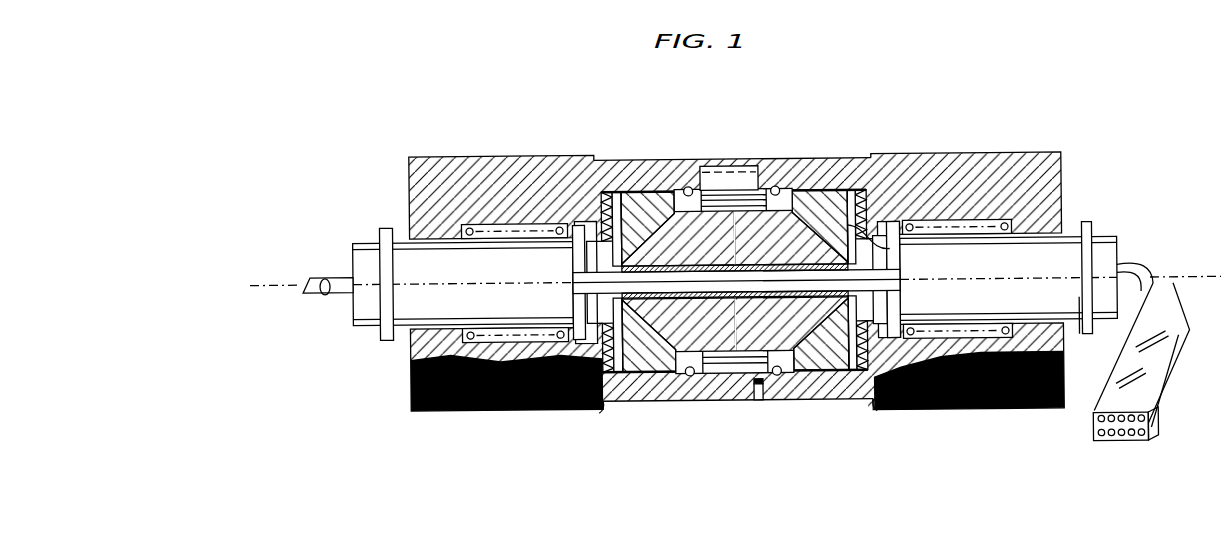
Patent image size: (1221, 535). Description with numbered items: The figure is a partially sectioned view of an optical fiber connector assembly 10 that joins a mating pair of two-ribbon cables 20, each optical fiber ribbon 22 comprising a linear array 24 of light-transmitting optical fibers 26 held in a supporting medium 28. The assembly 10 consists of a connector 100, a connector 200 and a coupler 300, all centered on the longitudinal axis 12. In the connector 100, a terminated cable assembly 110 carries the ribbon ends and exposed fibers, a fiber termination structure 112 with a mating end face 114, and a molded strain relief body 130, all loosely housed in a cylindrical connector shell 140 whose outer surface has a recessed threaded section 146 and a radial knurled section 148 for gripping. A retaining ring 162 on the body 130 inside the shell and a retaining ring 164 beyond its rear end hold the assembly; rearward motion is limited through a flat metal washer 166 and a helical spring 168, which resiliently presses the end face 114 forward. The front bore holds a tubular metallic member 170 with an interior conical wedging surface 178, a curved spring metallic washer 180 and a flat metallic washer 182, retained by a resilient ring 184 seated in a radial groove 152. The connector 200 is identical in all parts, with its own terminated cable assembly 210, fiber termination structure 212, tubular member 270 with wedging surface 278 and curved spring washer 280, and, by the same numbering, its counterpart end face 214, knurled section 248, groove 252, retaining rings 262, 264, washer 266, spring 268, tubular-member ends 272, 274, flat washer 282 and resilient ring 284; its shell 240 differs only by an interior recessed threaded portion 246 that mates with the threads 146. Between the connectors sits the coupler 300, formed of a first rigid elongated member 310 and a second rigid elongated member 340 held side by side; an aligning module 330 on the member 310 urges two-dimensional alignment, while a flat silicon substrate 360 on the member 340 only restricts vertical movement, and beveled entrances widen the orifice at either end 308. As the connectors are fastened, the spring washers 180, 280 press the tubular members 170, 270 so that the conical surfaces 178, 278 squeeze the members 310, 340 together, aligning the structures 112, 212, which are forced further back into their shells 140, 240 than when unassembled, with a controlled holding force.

The connector assembly 10 is at (663, 96).
The axis of the connector assembly 12 is at (268, 280).
The two-ribbon cable 20 is at (322, 278).
The optical fiber ribbon 22 is at (1160, 395).
The linear array 24 is at (1091, 419).
The optical fibers 26 is at (1121, 440).
The supporting medium 28 is at (1173, 347).
The connector 100 is at (846, 395).
The terminated cable assembly 110 is at (1104, 240).
The fiber termination structure 112 is at (776, 268).
The mating end face 114 is at (740, 293).
The molded strain relief body 130 is at (1078, 226).
The connector shell 140 is at (998, 155).
The recessed threaded section 146 is at (728, 370).
The radial knurled section 148 is at (985, 408).
The radial groove 152 is at (742, 168).
The retaining ring 162 is at (884, 222).
The retaining ring 164 is at (1078, 330).
The flat metal washer 166 is at (904, 224).
The helical spring 168 is at (958, 224).
The tubular metallic member 170 is at (810, 193).
The interior conical wedging surface 178 is at (892, 251).
The curved spring metallic washer 180 is at (853, 193).
The flat metallic washer 182 is at (862, 200).
The resilient ring 184 is at (776, 187).
The connector 200 is at (463, 408).
The terminated cable assembly 210 is at (370, 240).
The fiber termination structure 212 is at (681, 268).
The second rotor lower core 214 is at (728, 293).
The connector shell 240 is at (437, 154).
The interior recessed threaded portion 246 is at (756, 398).
The second lower housing 248 is at (430, 408).
The central bearing 252 is at (682, 192).
The flange 262 is at (595, 236).
The collar 264 is at (386, 226).
The flange 266 is at (577, 226).
The second shaft bearing 268 is at (502, 224).
The tubular member 270 is at (650, 382).
The lower central bearing 272 is at (688, 378).
The top plate 274 is at (610, 191).
The interior conical wedging surface 278 is at (666, 222).
The curved spring washer 280 is at (617, 192).
The seal 282 is at (607, 192).
The ball 284 is at (692, 187).
The coupler 300 is at (774, 392).
The end of the coupler 308 is at (600, 406).
The first rigid elongated member 310 is at (703, 374).
The aligning module 330 is at (797, 293).
The second rigid elongated member 340 is at (745, 191).
The silicon substrate 360 is at (722, 268).